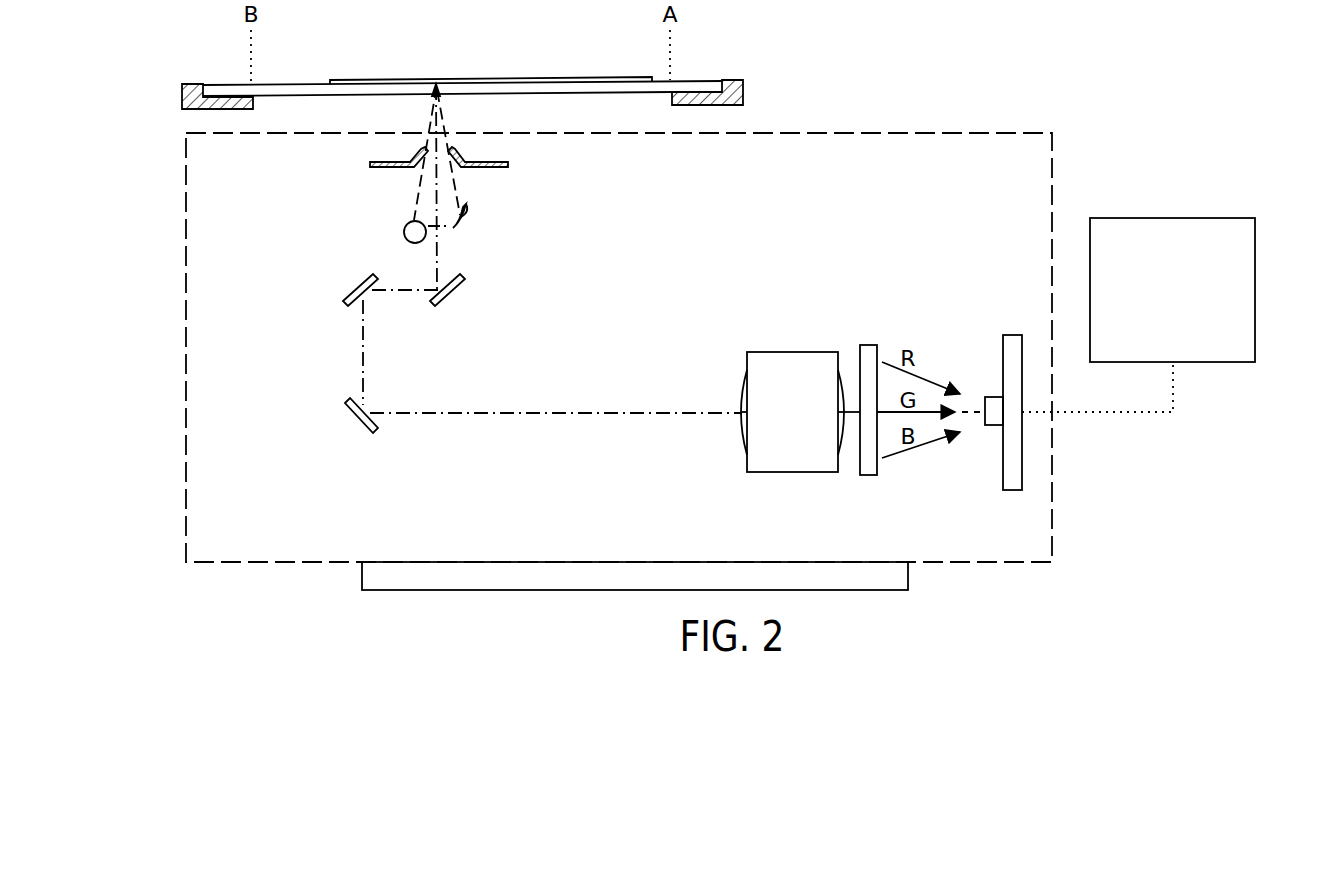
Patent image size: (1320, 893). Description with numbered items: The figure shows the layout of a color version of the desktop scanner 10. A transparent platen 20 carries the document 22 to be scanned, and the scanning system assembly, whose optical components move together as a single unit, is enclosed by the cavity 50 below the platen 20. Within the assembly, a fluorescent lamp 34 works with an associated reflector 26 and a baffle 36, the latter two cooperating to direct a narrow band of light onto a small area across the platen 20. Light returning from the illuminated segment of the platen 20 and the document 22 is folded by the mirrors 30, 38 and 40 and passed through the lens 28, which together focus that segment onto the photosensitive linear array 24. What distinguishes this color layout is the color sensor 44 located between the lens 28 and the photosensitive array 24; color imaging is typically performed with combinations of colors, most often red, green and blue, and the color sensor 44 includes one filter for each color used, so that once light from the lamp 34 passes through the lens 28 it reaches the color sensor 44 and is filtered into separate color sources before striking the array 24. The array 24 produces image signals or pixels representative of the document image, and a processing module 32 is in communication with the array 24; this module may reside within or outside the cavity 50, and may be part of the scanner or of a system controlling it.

The desktop scanner 10 is at (884, 64).
The transparent platen 20 is at (300, 84).
The document 22 is at (456, 78).
The photosensitive linear array 24 is at (999, 426).
The reflector 26 is at (465, 225).
The lens 28 is at (795, 352).
The mirror 30 is at (362, 283).
The processing module 32 is at (1167, 218).
The fluorescent lamp 34 is at (406, 227).
The baffle 36 is at (506, 164).
The mirror 38 is at (448, 298).
The mirror 40 is at (358, 426).
The color sensor 44 is at (866, 478).
The cavity 50 is at (958, 129).